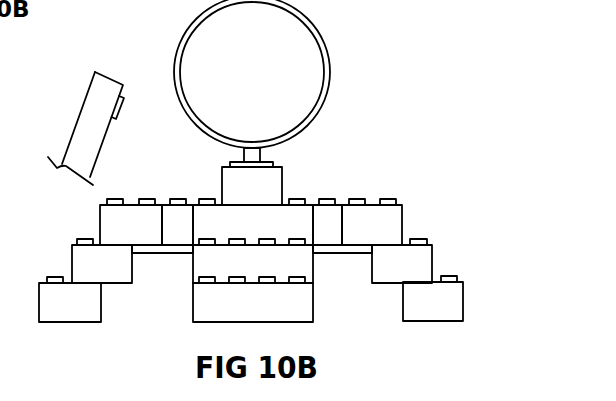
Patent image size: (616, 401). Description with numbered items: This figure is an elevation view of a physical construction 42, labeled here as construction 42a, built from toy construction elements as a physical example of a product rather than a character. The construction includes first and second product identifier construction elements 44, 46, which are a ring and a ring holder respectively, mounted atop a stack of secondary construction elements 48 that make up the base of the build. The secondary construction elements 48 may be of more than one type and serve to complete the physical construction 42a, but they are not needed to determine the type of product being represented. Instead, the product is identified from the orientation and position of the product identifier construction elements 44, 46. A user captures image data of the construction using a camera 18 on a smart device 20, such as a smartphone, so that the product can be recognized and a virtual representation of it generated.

The camera 18 is at (123, 106).
The smart device 20 is at (68, 130).
The physical construction 42 is at (324, 102).
The first physical construction 42a is at (252, 176).
The first product identifier construction element 44 is at (273, 138).
The second product identifier construction element 46 is at (250, 143).
The secondary construction element 48 is at (82, 304).